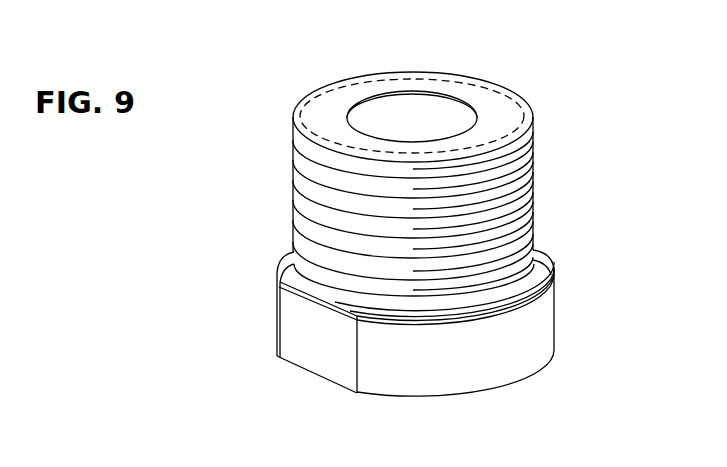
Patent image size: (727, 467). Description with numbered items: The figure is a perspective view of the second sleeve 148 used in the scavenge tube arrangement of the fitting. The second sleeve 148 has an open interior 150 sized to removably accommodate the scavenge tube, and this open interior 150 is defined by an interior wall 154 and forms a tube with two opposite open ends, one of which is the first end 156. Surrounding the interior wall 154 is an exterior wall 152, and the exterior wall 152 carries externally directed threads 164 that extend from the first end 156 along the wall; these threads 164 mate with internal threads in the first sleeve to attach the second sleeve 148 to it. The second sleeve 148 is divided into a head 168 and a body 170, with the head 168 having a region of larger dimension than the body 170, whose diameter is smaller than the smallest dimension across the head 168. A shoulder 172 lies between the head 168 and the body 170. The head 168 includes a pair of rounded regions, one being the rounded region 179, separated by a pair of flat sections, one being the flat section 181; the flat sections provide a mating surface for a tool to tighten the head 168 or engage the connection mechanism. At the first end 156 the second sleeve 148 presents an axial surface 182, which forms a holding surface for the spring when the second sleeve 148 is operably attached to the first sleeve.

The second sleeve 148 is at (608, 57).
The open interior 150 is at (400, 97).
The exterior wall 152 is at (536, 212).
The interior wall 154 is at (447, 107).
The first end 156 is at (363, 108).
The threads 164 is at (536, 164).
The head 168 is at (554, 330).
The body 170 is at (293, 212).
The shoulder 172 is at (548, 274).
The rounded region 179 is at (492, 384).
The flat section 181 is at (312, 364).
The axial surface 182 is at (328, 100).